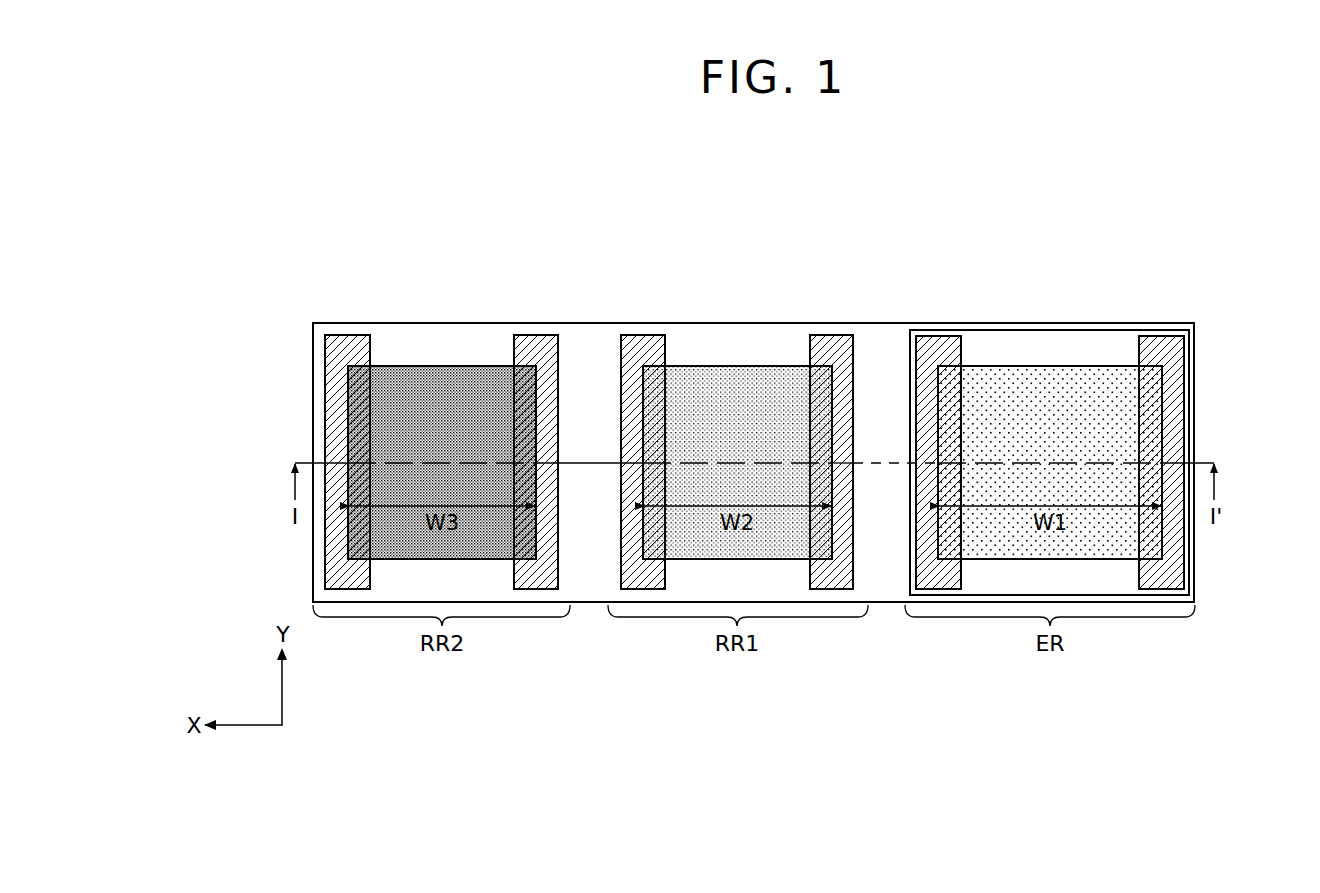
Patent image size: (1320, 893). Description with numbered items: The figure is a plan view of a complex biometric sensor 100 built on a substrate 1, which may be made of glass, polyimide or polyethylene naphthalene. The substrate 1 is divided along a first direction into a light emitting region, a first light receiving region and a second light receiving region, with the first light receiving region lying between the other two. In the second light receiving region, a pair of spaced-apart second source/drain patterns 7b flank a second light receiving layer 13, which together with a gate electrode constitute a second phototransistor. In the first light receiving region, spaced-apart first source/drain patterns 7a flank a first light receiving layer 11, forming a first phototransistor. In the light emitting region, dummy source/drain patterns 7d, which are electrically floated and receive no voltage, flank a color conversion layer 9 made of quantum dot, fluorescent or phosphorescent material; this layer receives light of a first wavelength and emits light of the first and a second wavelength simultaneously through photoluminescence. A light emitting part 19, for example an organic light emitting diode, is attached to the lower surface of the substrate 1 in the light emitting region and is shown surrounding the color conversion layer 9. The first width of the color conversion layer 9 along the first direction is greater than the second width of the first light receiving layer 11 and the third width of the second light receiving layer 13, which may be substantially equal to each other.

The complex biometric sensor 100 is at (1227, 224).
The substrate 1 is at (1194, 353).
The light emitting part 19 is at (1189, 412).
The second source/drain patterns 7b is at (343, 343).
The second light receiving layer 13 is at (437, 373).
The first source/drain patterns 7a is at (643, 343).
The first light receiving layer 11 is at (737, 373).
The dummy source/drain patterns 7d is at (933, 345).
The color conversion layer 9 is at (1052, 373).